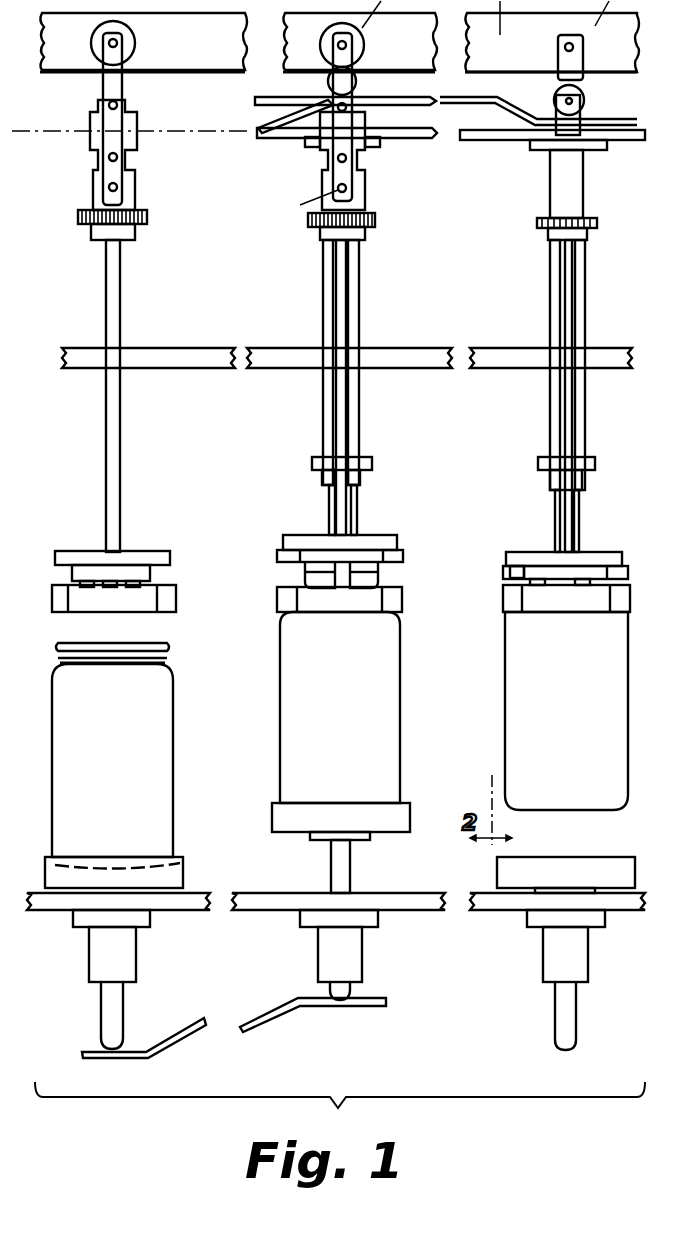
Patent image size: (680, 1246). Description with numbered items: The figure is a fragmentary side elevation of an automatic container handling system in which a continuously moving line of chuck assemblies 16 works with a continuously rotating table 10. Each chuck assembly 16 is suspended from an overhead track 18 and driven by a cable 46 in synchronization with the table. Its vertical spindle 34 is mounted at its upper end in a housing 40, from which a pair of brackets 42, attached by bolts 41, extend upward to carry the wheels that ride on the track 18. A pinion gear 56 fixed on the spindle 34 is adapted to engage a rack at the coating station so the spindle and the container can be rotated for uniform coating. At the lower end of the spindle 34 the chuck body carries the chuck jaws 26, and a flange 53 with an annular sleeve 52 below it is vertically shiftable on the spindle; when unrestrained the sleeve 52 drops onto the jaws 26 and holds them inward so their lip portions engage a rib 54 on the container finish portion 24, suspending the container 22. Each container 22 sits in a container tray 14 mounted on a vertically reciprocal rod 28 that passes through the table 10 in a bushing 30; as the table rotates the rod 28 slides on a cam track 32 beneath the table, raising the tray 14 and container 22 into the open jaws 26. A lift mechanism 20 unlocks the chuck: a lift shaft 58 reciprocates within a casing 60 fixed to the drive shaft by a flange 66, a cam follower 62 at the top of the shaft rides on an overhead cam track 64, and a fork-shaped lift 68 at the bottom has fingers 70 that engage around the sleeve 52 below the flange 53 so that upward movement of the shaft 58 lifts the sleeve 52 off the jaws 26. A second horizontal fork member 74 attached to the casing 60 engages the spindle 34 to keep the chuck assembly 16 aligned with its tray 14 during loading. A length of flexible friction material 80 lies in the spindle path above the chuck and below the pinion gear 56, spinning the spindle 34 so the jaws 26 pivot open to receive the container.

The rotating table 10 is at (212, 893).
The container tray 14 is at (183, 857).
The chuck assembly 16 is at (250, 583).
The overhead track 18 is at (234, 68).
The lift mechanism 20 is at (600, 410).
The container 22 is at (340, 734).
The container finish portion 24 is at (168, 655).
The chuck jaws 26 is at (288, 598).
The reciprocal rod 28 is at (105, 1013).
The bushing 30 is at (136, 965).
The cam track 32 is at (204, 1022).
The spindle 34 is at (113, 526).
The housing 40 is at (137, 192).
The bolts 41 is at (307, 206).
The brackets 42 is at (136, 33).
The cable 46 is at (216, 133).
The annular sleeve 52 is at (153, 573).
The flange 53 is at (170, 552).
The rib 54 is at (118, 666).
The pinion gear 56 is at (147, 226).
The lift shaft 58 is at (576, 121).
The casing 60 is at (573, 183).
The cam follower 62 is at (558, 96).
The overhead cam track 64 is at (518, 118).
The flange 66 is at (630, 142).
The lift 68 is at (633, 571).
The fingers 70 is at (516, 566).
The second horizontal member 74 is at (598, 464).
The flexible friction member 80 is at (406, 352).